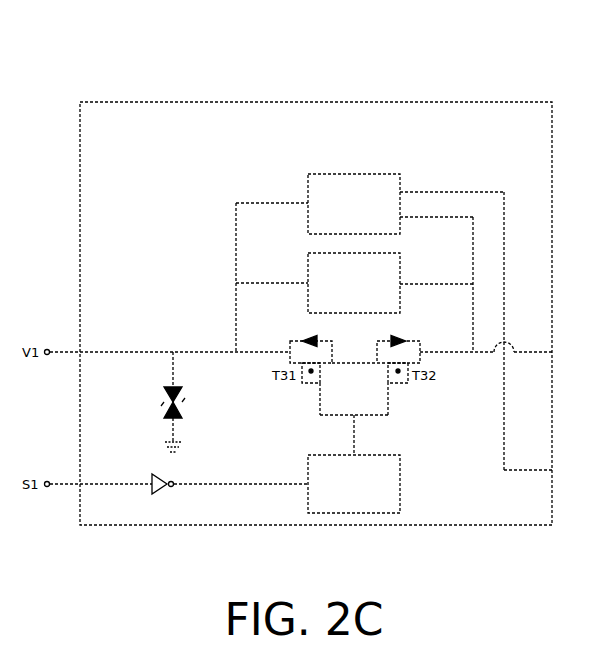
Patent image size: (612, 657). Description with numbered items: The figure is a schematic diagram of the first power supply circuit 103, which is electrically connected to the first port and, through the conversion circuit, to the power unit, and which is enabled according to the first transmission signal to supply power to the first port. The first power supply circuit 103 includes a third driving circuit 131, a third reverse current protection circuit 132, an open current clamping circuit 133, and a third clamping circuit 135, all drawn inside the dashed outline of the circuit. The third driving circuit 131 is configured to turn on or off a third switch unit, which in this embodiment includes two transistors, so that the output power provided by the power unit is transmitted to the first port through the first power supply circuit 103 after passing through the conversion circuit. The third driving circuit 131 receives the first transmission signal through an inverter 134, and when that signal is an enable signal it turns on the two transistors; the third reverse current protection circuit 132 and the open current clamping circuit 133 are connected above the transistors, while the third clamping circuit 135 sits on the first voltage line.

The first power supply circuit 103 is at (540, 30).
The third driving circuit 131 is at (341, 492).
The third reverse current protection circuit 132 is at (341, 292).
The open current clamping circuit 133 is at (341, 212).
The inverter 134 is at (165, 493).
The third clamping circuit 135 is at (183, 400).